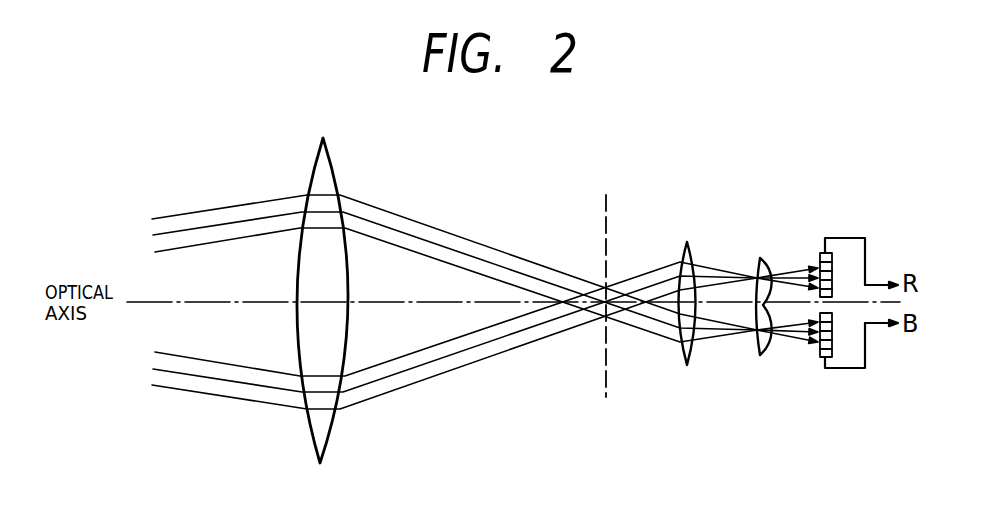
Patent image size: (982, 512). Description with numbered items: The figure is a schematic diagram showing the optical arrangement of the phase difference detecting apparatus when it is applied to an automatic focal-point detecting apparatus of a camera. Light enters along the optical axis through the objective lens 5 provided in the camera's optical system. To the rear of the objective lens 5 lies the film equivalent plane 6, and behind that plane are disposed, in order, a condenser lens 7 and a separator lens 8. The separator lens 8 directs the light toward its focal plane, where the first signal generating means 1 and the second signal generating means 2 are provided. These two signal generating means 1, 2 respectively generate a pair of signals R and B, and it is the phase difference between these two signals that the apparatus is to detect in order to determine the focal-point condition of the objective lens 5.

The first signal generating means 1 is at (821, 253).
The second signal generating means 2 is at (821, 357).
The objective lens 5 is at (330, 151).
The film equivalent plane 6 is at (607, 197).
The condenser lens 7 is at (685, 362).
The separator lens 8 is at (762, 356).